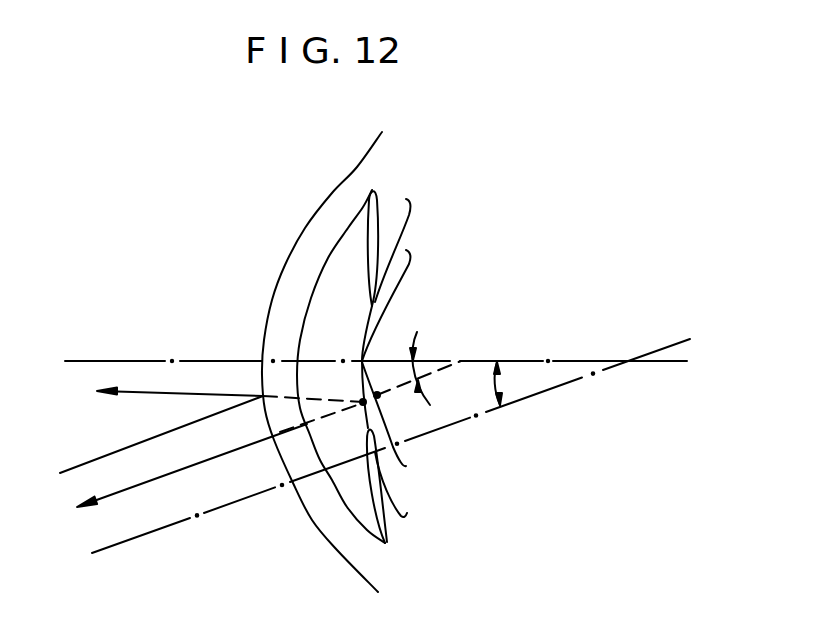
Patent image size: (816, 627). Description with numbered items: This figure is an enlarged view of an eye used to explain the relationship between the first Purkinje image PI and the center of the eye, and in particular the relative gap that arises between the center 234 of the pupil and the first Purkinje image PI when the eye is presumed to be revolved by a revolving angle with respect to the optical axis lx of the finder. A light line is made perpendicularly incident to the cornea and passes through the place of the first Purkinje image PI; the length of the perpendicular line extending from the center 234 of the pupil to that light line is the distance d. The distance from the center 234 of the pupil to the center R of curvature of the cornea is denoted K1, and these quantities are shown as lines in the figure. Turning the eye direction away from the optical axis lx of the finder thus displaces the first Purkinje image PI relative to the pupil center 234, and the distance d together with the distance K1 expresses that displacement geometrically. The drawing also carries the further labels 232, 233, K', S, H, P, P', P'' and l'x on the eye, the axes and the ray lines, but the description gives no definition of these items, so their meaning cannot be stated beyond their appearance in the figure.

The lens outer surface 232 is at (285, 266).
The lens inner surface 233 is at (368, 228).
The center of pupil 234 is at (362, 360).
The outer surface vertex on axis K' is at (226, 328).
The distance from pupil center to corneal curvature center K1 is at (450, 352).
The center of curvature of the cornea R is at (475, 361).
The intersection point of axes S is at (628, 363).
The point H is at (379, 397).
The incident light beam P is at (161, 492).
The intermediate light beam P' is at (209, 518).
The exit light beam P'' is at (170, 504).
The first Purkinje image PI is at (360, 407).
The perpendicular distance from pupil center to incident light line d is at (390, 358).
The optical axis lx is at (550, 402).
The optical axis l'x is at (397, 326).